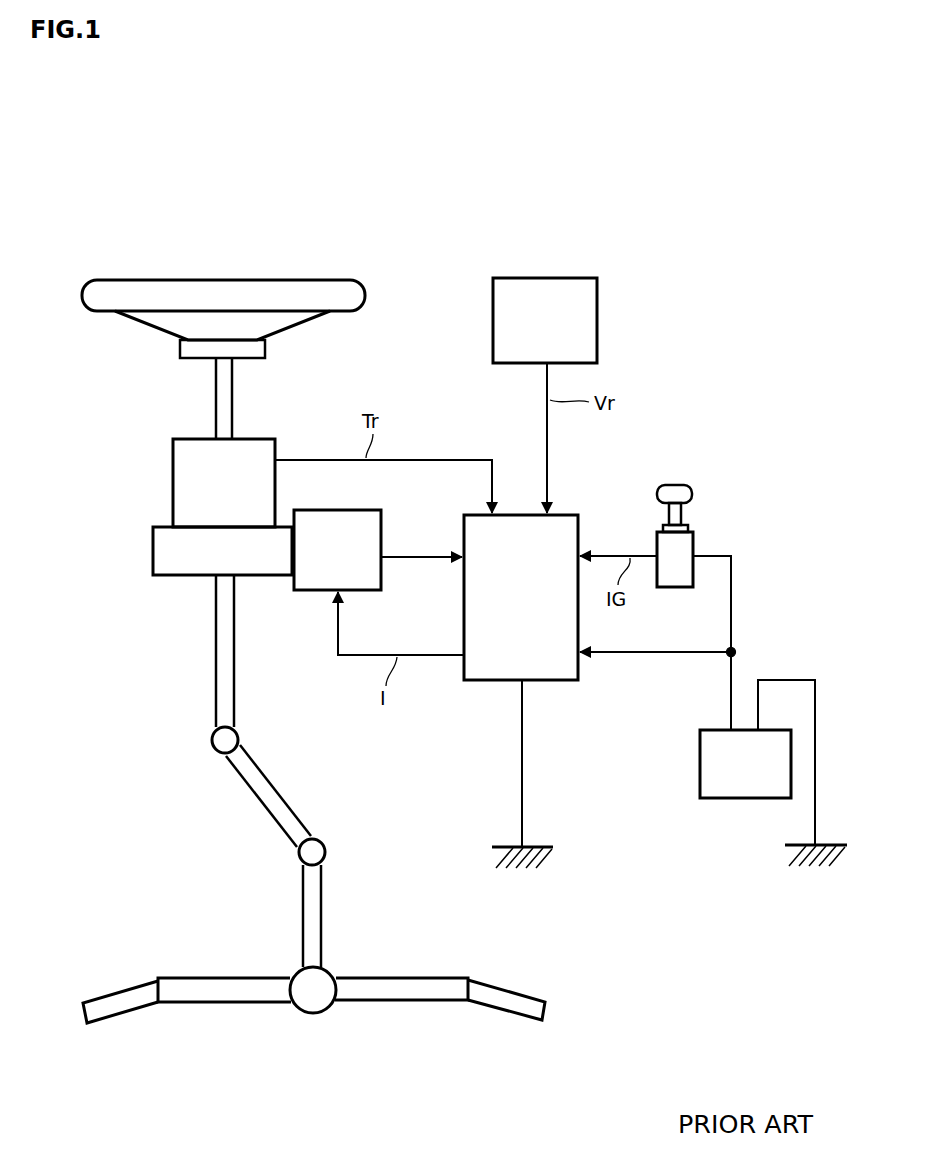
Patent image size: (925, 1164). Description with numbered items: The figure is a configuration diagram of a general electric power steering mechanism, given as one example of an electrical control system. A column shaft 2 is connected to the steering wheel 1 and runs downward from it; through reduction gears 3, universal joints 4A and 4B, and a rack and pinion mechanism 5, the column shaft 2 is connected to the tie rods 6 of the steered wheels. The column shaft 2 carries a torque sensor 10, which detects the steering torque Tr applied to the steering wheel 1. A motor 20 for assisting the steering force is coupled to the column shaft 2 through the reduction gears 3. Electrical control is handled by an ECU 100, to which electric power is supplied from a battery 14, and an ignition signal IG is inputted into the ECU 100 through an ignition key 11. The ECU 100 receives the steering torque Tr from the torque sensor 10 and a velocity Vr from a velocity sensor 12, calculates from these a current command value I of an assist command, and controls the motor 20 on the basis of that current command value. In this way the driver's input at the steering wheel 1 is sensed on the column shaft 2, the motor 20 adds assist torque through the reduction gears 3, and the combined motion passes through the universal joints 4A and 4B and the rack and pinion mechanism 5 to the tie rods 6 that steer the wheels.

The steering wheel 1 is at (367, 296).
The column shaft 2 is at (206, 408).
The torque sensor 10 is at (172, 478).
The reduction gears 3 is at (152, 548).
The motor 20 is at (381, 516).
The ECU 100 is at (579, 528).
The velocity sensor 12 is at (599, 291).
The ignition key 11 is at (694, 493).
The battery 14 is at (700, 757).
The universal joint 4A is at (211, 748).
The universal joint 4B is at (298, 858).
The rack and pinion mechanism 5 is at (334, 967).
The tie rods 6 is at (498, 985).